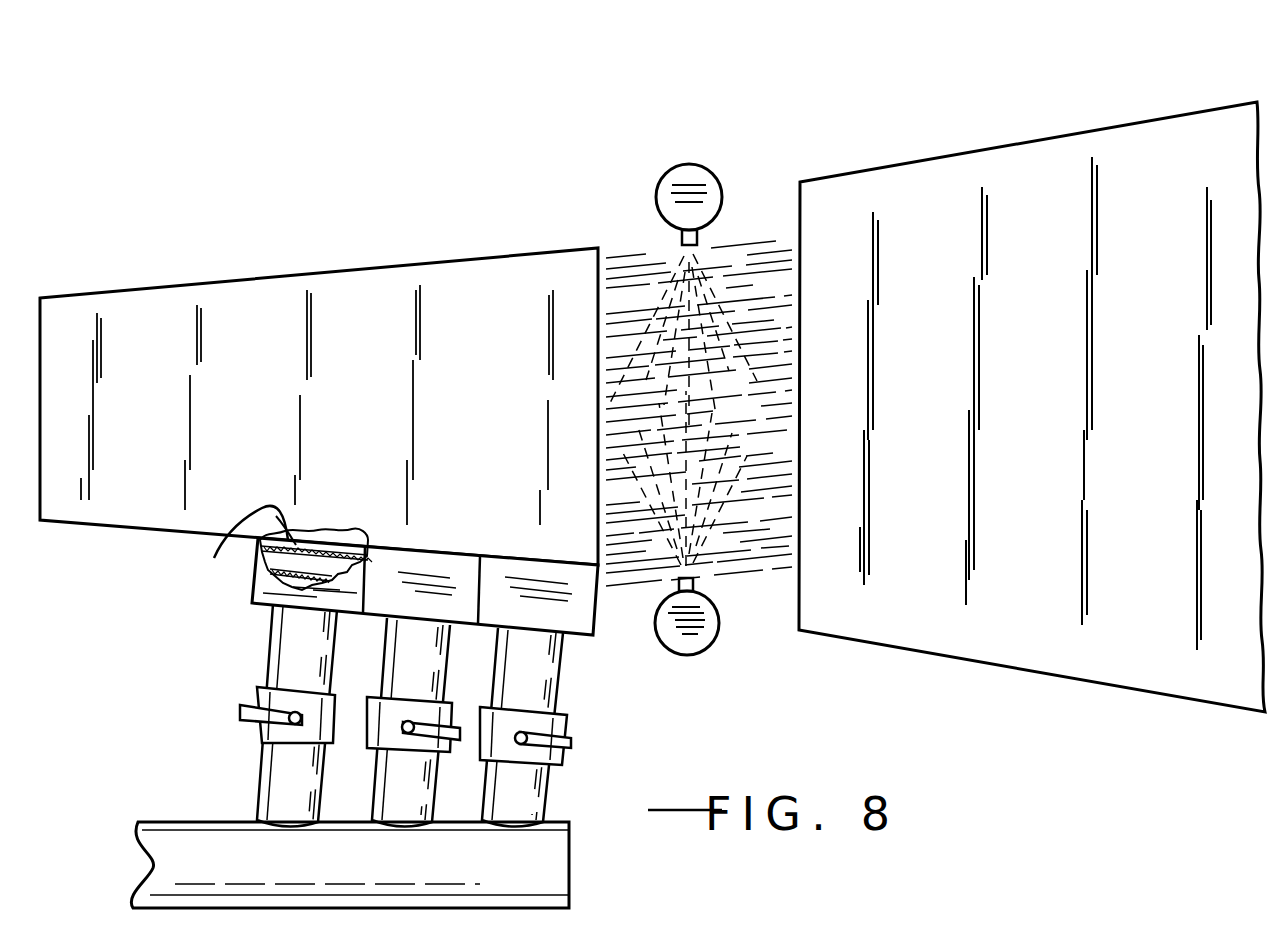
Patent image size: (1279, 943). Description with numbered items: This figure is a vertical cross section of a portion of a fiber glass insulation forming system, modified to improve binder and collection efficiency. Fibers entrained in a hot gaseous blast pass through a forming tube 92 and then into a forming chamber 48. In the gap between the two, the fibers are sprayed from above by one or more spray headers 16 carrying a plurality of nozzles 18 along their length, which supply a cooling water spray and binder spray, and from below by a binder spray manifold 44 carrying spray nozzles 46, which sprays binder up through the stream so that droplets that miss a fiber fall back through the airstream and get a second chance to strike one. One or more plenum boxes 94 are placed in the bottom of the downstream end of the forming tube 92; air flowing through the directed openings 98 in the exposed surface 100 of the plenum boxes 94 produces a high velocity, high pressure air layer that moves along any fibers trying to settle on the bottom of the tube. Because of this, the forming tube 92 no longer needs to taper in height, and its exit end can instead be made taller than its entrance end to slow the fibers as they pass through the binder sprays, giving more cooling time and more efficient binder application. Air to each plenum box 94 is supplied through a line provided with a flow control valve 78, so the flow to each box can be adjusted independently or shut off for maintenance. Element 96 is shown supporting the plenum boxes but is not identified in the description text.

The spray header 16 is at (703, 167).
The nozzle 18 is at (680, 238).
The binder spray manifold 44 is at (687, 646).
The spray nozzle 46 is at (693, 583).
The forming chamber 48 is at (1052, 437).
The flow control valve 78 is at (265, 728).
The forming tube 92 is at (368, 363).
The plenum box 94 is at (453, 605).
The base rail 96 is at (543, 868).
The directed opening 98 is at (423, 550).
The exposed surface 100 is at (219, 550).